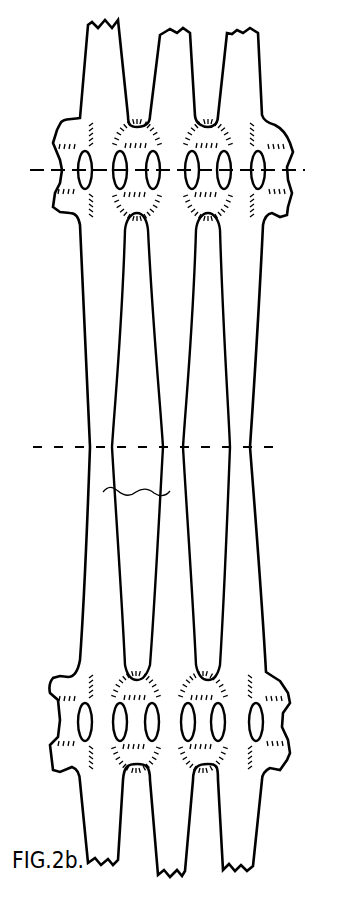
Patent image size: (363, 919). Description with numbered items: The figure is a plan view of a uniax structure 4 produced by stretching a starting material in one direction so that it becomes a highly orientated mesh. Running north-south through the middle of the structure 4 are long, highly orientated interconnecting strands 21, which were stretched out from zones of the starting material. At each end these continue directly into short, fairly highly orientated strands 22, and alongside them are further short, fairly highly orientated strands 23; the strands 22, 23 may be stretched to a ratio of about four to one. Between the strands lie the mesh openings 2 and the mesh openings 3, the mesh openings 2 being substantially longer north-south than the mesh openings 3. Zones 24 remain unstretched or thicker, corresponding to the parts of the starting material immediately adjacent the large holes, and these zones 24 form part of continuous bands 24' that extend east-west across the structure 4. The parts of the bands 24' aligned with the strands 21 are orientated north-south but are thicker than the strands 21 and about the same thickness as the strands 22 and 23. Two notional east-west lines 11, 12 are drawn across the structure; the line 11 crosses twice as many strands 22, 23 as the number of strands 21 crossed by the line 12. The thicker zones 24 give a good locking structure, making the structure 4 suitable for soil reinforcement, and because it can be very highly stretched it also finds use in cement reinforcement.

The mesh openings 2 is at (148, 384).
The mesh openings 3 is at (80, 162).
The uniax structure 4 is at (270, 78).
The notional E-W line 11 is at (156, 171).
The notional E-W line 12 is at (146, 442).
The interconnecting strands 21 is at (136, 481).
The strands 22 is at (100, 719).
The strands 23 is at (272, 720).
The zones 24 is at (153, 748).
The bands 24' is at (55, 729).